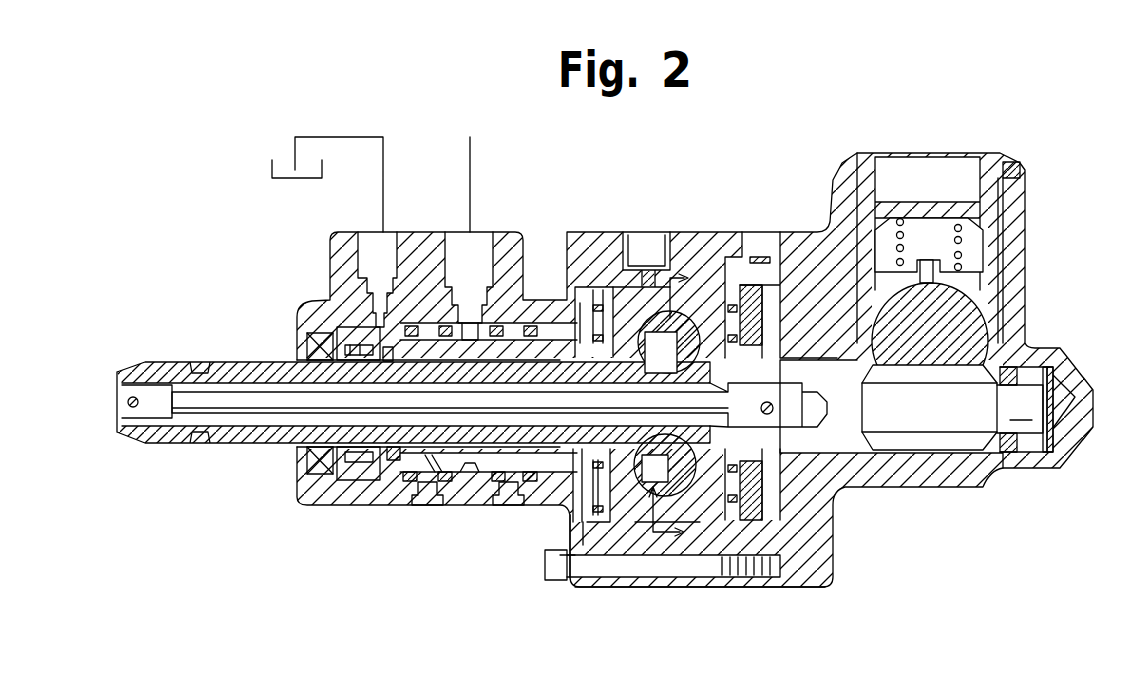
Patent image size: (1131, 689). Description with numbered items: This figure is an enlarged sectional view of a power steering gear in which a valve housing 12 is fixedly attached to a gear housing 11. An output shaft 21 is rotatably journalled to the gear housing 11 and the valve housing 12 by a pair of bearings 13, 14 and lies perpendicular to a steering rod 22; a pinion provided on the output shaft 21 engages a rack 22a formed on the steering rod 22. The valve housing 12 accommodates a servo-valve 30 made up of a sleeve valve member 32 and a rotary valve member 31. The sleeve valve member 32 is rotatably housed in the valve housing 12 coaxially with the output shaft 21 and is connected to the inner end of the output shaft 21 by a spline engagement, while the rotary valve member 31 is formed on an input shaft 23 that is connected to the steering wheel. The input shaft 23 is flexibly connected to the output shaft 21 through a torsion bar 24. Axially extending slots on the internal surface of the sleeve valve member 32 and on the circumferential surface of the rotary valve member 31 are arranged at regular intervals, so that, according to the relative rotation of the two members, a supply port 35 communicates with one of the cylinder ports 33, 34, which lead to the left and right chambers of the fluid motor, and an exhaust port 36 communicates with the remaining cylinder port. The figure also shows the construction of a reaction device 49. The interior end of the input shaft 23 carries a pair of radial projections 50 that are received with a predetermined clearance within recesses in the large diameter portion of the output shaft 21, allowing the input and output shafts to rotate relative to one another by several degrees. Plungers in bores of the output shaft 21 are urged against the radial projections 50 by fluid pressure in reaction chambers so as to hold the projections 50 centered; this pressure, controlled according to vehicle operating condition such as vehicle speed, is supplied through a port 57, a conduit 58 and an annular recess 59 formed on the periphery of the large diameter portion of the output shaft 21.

The gear housing 11 is at (816, 247).
The valve housing 12 is at (620, 543).
The bearing 13 is at (1025, 440).
The bearing 14 is at (582, 545).
The output shaft 21 is at (935, 422).
The steering rod 22 is at (960, 303).
The rack 22a is at (1027, 345).
The input shaft 23 is at (233, 363).
The torsion bar 24 is at (287, 397).
The servo-valve 30 is at (509, 318).
The rotary valve member 31 is at (395, 465).
The sleeve valve member 32 is at (400, 470).
The cylinder port 33 is at (427, 507).
The cylinder port 34 is at (502, 508).
The supply port 35 is at (490, 250).
The exhaust port 36 is at (367, 253).
The reaction device 49 is at (650, 490).
The radial projection 50 is at (743, 253).
The port 57 is at (632, 237).
The conduit 58 is at (645, 283).
The annular recess 59 is at (703, 280).